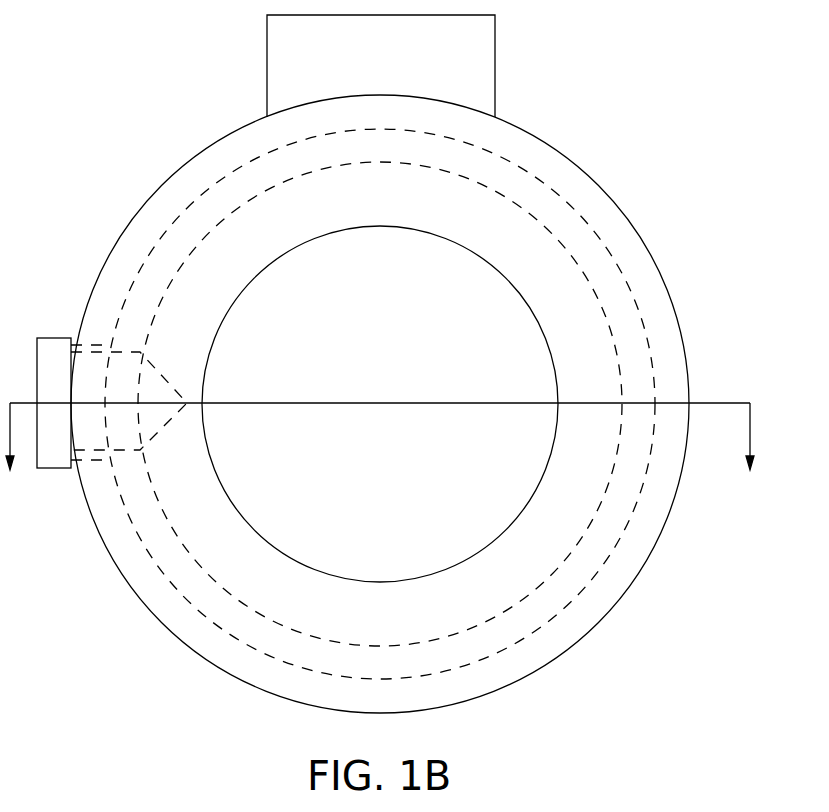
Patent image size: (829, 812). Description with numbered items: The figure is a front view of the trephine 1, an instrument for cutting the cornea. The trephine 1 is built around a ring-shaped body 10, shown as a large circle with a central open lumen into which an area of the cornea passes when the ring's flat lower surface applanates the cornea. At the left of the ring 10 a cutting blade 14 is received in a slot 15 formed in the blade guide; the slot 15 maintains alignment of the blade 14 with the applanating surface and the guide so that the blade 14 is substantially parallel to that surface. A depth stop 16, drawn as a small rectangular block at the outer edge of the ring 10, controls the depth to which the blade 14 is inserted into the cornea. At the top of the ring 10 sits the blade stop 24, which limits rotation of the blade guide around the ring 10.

The trephine 1 is at (173, 118).
The ring-shaped body 10 is at (233, 540).
The cutting blade 14 is at (162, 377).
The slot 15 is at (100, 460).
The depth stop 16 is at (50, 338).
The blade stop 24 is at (495, 58).